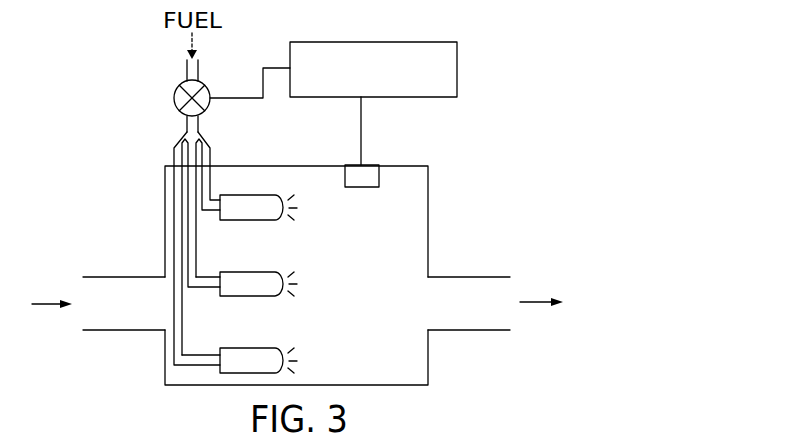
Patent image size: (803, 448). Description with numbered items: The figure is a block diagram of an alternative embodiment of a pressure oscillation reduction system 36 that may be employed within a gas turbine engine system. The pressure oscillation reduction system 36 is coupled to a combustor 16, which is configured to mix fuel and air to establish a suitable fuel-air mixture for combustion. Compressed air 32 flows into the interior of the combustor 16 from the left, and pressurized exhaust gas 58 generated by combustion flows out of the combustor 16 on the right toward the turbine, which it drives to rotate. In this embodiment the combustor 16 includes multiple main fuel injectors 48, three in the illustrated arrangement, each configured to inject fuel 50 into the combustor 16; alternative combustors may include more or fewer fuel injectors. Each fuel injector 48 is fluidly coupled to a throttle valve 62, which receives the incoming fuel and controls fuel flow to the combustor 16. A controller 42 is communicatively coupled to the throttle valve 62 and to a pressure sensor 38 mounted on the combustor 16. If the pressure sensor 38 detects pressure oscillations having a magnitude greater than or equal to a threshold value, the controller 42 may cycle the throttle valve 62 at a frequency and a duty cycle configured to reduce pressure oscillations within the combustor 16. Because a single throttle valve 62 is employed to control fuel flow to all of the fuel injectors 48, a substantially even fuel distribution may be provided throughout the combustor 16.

The combustor 16 is at (428, 222).
The compressed air 32 is at (48, 300).
The pressure oscillation reduction system 36 is at (523, 63).
The pressure sensor 38 is at (370, 187).
The controller 42 is at (457, 70).
The main fuel injector 48 is at (232, 221).
The fuel 50 is at (298, 214).
The pressurized exhaust gas 58 is at (540, 298).
The throttle valve 62 is at (173, 97).